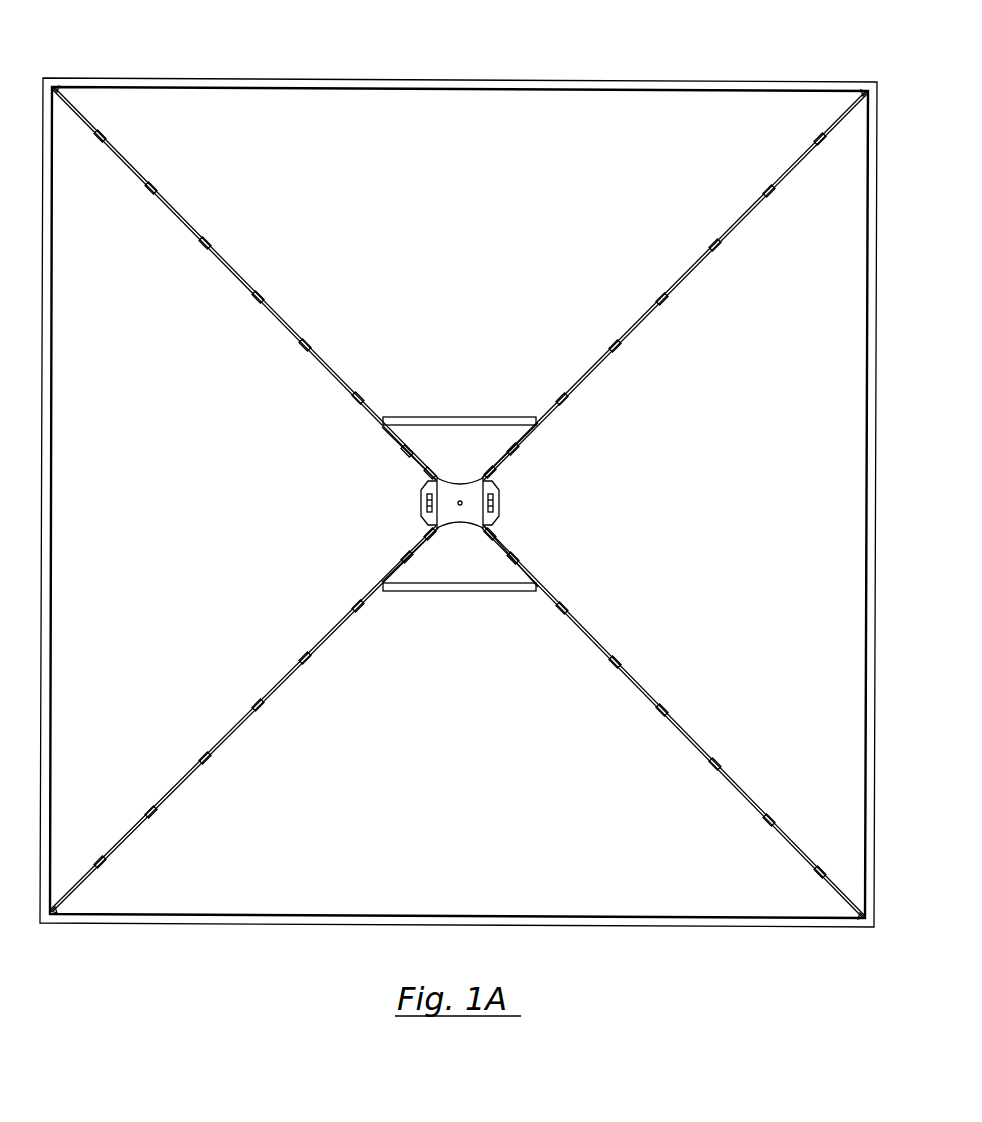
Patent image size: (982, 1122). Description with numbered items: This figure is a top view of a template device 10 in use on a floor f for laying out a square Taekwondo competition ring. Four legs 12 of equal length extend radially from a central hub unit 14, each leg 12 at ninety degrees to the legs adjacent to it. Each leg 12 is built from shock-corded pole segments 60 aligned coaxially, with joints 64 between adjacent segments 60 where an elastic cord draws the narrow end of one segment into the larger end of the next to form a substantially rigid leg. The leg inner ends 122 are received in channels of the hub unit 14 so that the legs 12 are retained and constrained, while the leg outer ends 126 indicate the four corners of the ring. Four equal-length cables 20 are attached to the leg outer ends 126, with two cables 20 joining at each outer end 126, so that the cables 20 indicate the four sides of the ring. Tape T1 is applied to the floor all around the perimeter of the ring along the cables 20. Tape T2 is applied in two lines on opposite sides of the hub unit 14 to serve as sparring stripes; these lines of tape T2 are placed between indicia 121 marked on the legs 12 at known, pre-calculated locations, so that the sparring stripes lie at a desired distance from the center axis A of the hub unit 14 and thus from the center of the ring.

The template device 10 is at (305, 73).
The tape T1 is at (510, 82).
The cables 20 is at (370, 90).
The pole segments 60 is at (80, 117).
The joints 64 is at (103, 137).
The leg outer ends 126 is at (866, 95).
The legs 12 is at (557, 392).
The tape T2 is at (463, 418).
The indicia 121 is at (383, 429).
The leg inner ends 122 is at (437, 522).
The hub unit 14 is at (505, 490).
The center axis A is at (460, 500).
The force direction f is at (608, 875).